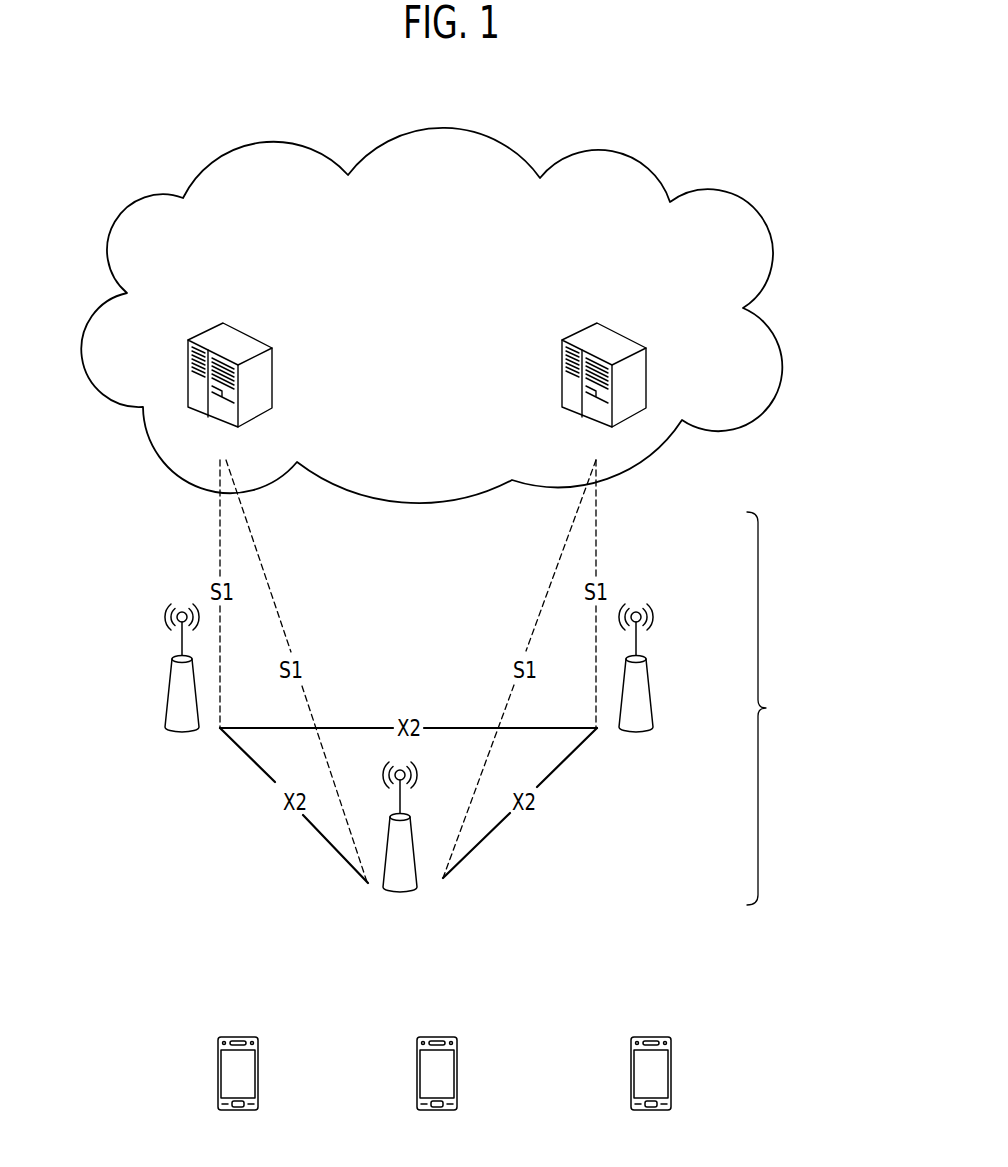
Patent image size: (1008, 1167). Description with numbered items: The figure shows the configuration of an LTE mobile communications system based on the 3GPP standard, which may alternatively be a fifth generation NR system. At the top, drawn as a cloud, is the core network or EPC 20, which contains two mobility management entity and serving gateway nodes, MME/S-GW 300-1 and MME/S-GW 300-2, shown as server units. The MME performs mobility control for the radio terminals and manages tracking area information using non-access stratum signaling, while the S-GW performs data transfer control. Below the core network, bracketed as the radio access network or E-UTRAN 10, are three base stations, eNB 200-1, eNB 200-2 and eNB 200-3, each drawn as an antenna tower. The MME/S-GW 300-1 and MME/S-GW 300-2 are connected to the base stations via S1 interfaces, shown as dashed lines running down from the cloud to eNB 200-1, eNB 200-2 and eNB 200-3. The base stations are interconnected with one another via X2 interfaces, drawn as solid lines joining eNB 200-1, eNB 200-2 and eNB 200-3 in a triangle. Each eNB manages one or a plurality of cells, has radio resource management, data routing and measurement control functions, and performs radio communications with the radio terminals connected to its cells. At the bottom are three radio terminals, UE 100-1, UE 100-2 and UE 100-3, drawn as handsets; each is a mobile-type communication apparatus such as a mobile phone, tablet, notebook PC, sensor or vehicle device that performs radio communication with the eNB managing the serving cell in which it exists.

The core network (EPC) 20 is at (648, 167).
The MME/S-GW 300-1 is at (252, 336).
The MME/S-GW 300-2 is at (618, 333).
The eNB (base station) 200-1 is at (170, 693).
The eNB (base station) 200-2 is at (418, 864).
The eNB (base station) 200-3 is at (649, 672).
The radio access network (E-UTRAN) 10 is at (811, 708).
The UE (radio terminal) 100-1 is at (275, 1008).
The UE (radio terminal) 100-2 is at (450, 1036).
The UE (radio terminal) 100-3 is at (663, 1036).